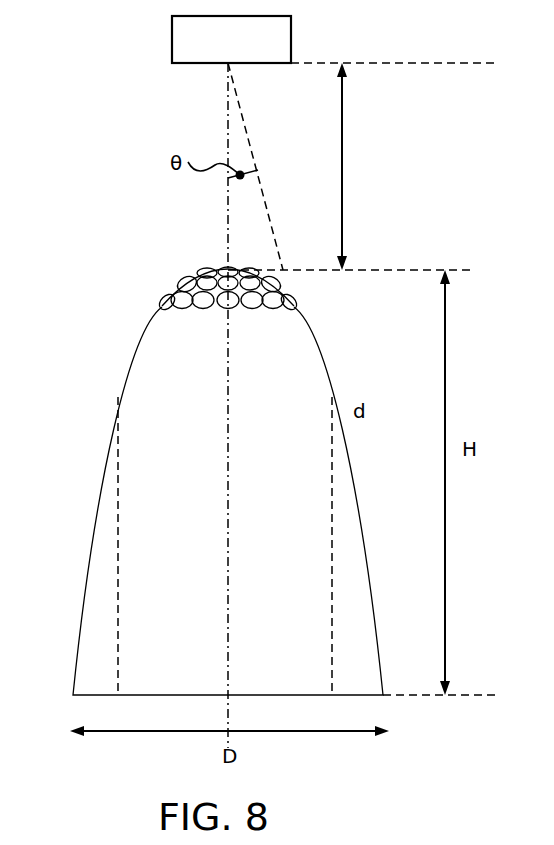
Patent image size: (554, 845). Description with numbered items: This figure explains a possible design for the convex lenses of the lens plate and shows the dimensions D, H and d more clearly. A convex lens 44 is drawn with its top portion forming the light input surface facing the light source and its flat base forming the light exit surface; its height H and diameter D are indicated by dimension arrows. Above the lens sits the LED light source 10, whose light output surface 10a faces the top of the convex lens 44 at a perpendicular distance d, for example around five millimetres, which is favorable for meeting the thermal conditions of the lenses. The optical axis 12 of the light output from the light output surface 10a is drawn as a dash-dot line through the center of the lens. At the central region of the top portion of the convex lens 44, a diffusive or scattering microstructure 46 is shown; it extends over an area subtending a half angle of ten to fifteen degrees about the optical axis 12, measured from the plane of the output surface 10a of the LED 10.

The LED light source 10 is at (155, 33).
The light output surface 10a is at (178, 66).
The optical axis 12 is at (228, 217).
The convex lens 44 is at (124, 398).
The microstructure 46 is at (164, 297).